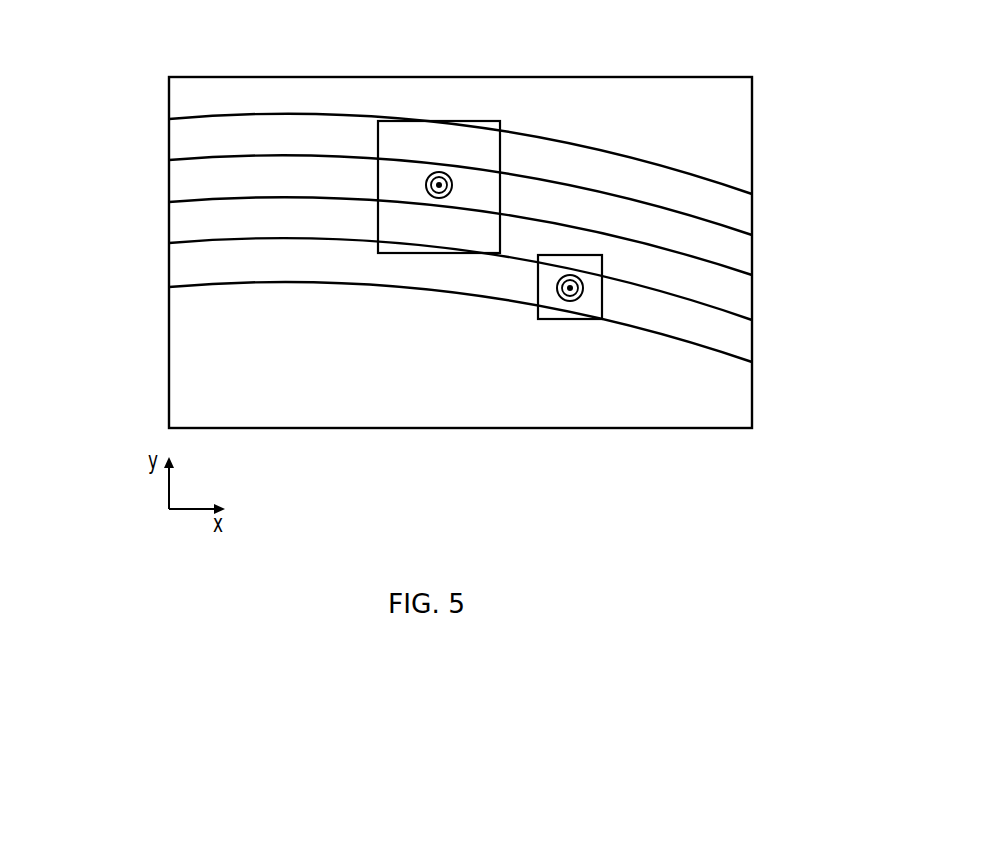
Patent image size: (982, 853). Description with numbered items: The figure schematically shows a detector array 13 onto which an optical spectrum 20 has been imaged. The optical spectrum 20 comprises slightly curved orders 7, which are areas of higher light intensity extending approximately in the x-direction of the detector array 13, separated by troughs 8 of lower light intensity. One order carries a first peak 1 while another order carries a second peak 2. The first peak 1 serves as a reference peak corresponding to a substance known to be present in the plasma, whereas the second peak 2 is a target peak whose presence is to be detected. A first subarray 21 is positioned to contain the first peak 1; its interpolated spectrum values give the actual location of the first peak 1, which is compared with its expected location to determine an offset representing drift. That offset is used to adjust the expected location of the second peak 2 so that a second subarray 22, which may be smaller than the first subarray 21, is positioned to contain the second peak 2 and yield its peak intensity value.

The first peak 1 is at (441, 183).
The second peak 2 is at (575, 295).
The orders 7 is at (185, 141).
The troughs 8 is at (154, 284).
The detector array 13 is at (752, 133).
The optical spectrum 20 is at (434, 246).
The first subarray 21 is at (377, 148).
The second subarray 22 is at (602, 304).